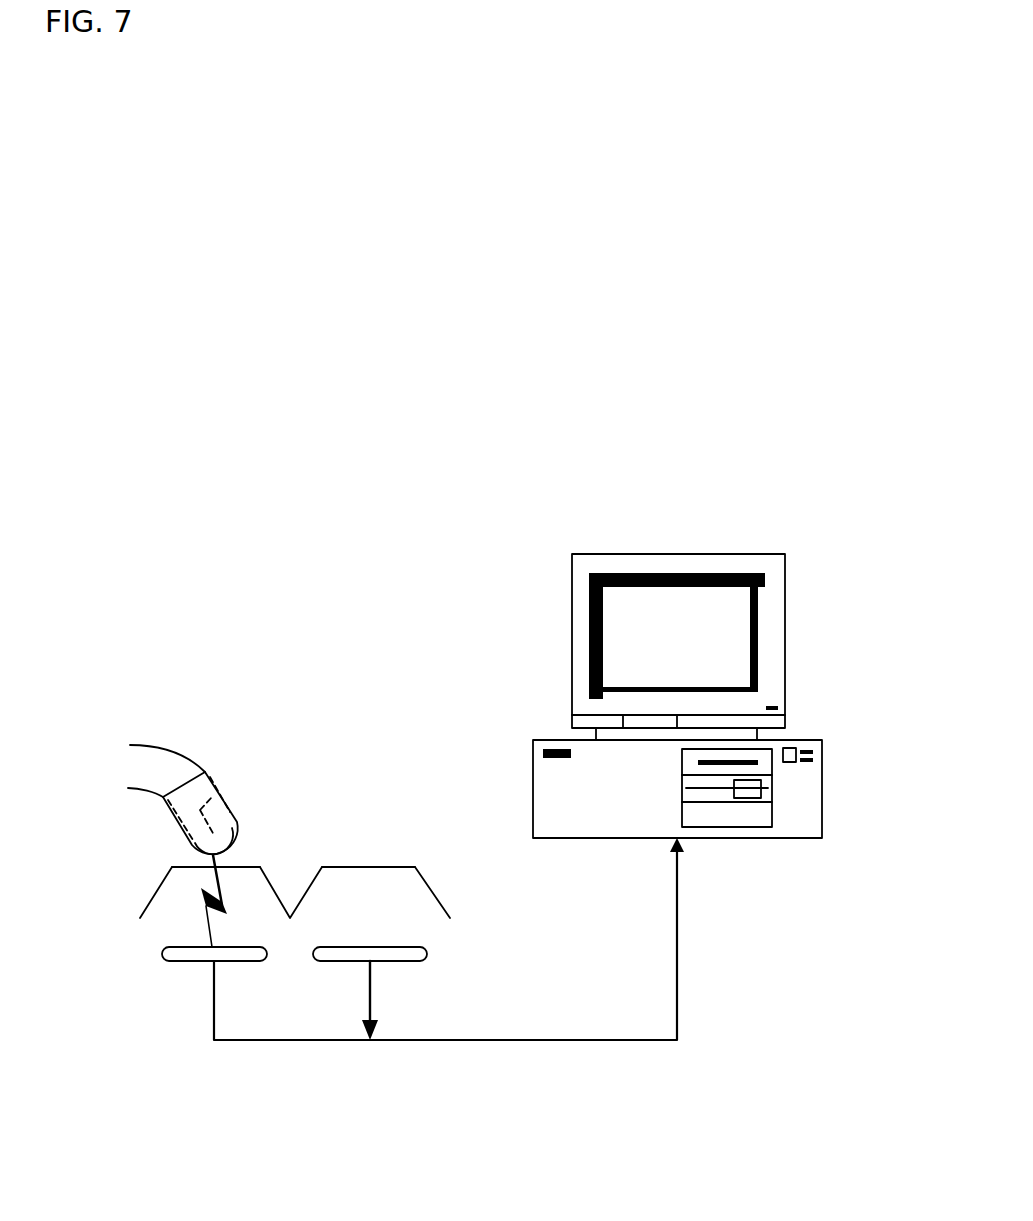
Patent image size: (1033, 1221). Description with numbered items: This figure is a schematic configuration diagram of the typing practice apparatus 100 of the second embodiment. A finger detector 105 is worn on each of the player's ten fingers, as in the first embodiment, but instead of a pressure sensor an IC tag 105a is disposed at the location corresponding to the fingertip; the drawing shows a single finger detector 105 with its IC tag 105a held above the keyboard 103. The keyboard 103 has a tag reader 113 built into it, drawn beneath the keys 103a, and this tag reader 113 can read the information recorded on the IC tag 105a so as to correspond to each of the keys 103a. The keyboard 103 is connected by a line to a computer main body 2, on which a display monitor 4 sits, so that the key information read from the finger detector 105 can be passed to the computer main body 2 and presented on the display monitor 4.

The typing practice apparatus 100 is at (448, 400).
The keyboard 103 is at (295, 777).
The keys 103a is at (252, 863).
The finger detector 105 is at (127, 827).
The IC tag 105a is at (187, 847).
The tag reader 113 is at (183, 957).
The display monitor 4 is at (752, 557).
The computer main body 2 is at (807, 740).